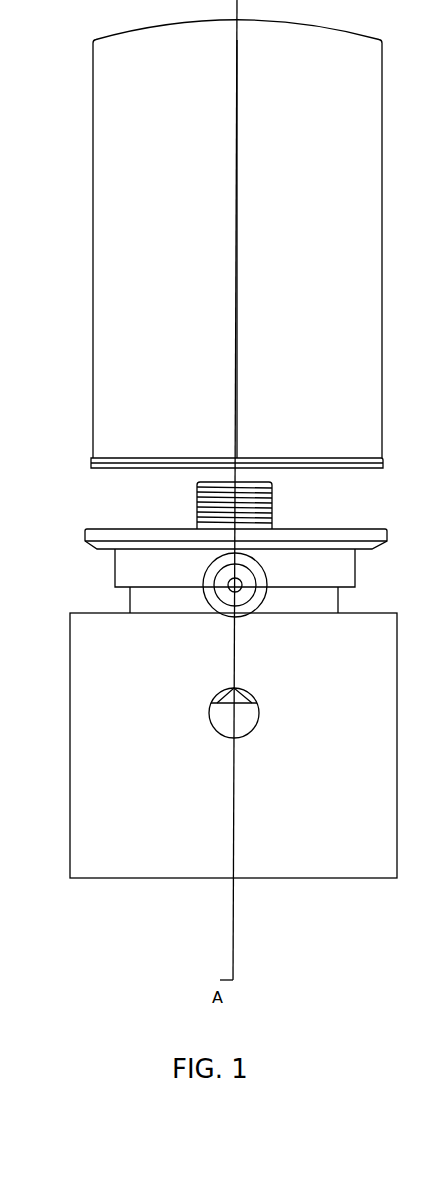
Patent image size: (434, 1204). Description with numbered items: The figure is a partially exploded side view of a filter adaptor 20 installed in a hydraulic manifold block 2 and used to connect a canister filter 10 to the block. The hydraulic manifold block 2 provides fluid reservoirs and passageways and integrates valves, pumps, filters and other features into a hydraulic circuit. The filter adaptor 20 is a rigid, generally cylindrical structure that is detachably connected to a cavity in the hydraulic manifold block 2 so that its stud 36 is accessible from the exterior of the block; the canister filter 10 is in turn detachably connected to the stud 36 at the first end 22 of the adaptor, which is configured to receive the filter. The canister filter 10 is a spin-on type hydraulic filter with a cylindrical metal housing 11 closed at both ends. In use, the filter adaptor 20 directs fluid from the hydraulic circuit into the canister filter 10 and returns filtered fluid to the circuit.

The hydraulic manifold block 2 is at (83, 697).
The canister filter 10 is at (110, 112).
The housing 11 is at (176, 236).
The filter adaptor 20 is at (123, 568).
The first end 22 is at (388, 540).
The stud 36 is at (276, 511).